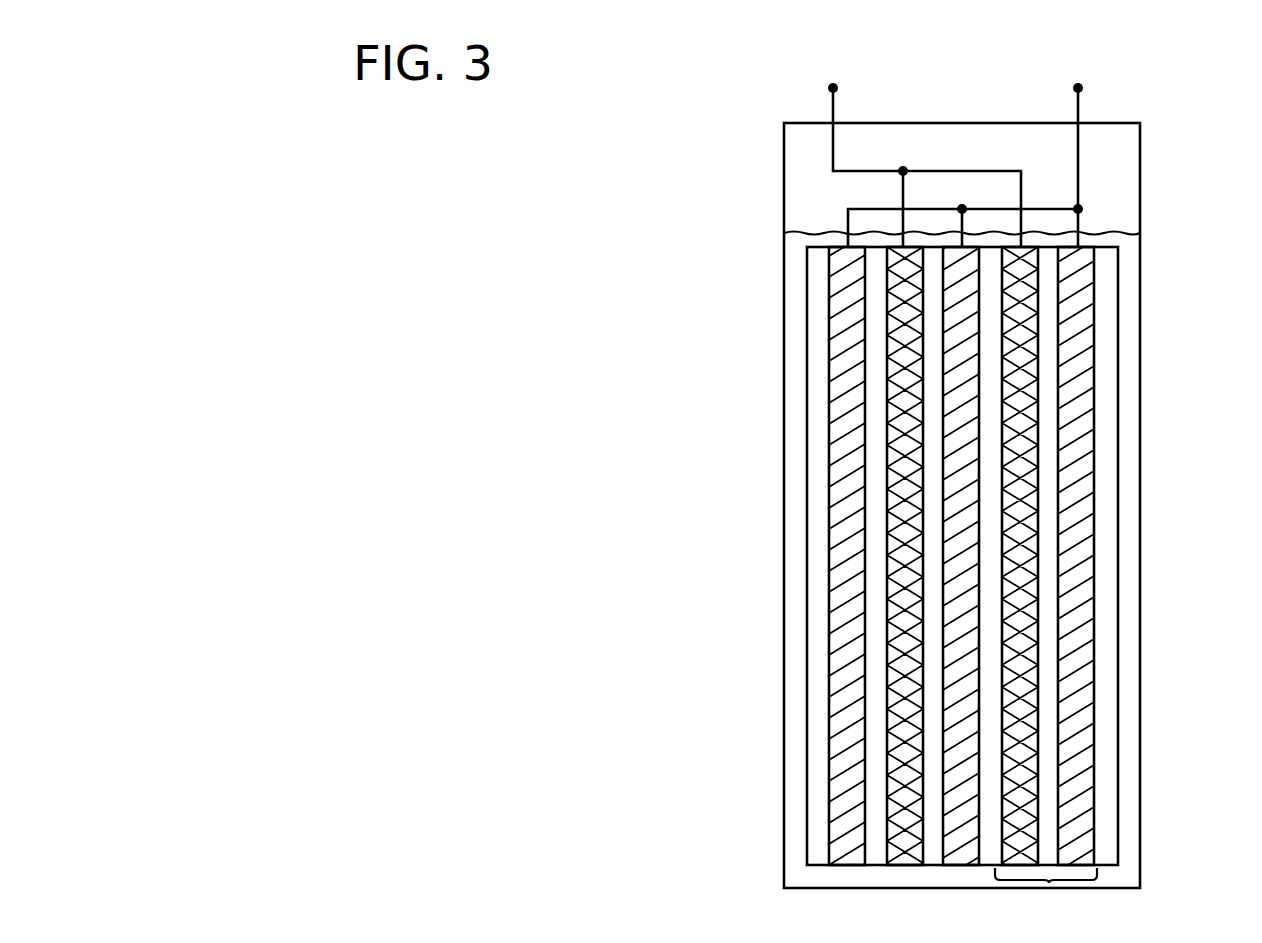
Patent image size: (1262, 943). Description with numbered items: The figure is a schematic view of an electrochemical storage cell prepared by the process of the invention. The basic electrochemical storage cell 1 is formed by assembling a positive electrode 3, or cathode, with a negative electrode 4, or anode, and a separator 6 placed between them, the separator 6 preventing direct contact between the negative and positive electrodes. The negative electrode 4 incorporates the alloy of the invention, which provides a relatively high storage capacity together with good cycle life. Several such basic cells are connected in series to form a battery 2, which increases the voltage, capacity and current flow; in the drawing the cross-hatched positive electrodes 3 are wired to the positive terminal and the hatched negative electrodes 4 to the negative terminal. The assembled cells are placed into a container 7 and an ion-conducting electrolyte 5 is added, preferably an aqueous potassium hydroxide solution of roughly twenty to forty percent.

The electrochemical storage cell 1 is at (1046, 893).
The battery 2 is at (645, 414).
The positive electrode 3 is at (1018, 297).
The negative electrode 4 is at (1078, 344).
The ion-conducting electrolyte 5 is at (793, 288).
The separator 6 is at (1052, 503).
The container 7 is at (1152, 167).